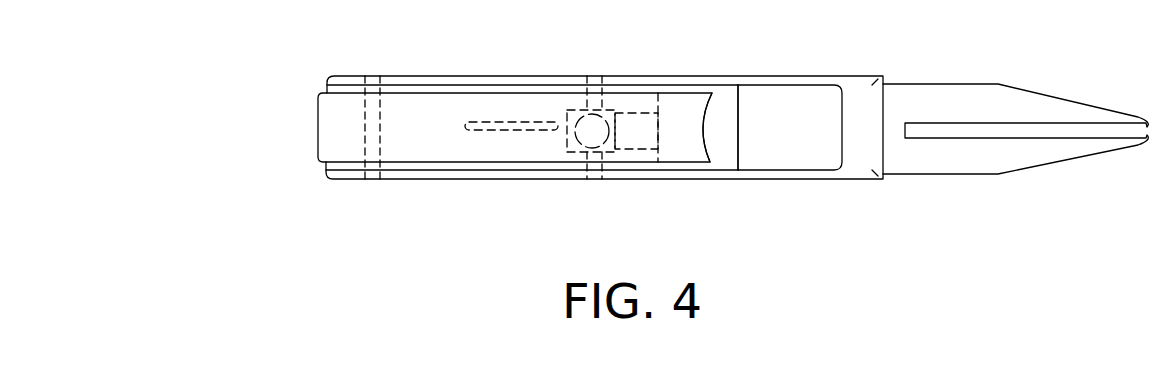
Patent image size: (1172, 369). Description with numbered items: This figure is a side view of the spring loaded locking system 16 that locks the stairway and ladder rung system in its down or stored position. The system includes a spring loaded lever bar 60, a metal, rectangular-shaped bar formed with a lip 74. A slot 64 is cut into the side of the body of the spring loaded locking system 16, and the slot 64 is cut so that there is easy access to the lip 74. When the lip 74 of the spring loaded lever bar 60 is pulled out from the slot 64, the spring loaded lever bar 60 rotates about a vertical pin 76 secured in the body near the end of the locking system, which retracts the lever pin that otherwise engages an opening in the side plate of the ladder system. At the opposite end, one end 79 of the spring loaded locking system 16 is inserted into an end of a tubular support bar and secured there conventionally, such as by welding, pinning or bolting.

The spring loaded locking system 16 is at (400, 207).
The spring loaded lever bar 60 is at (440, 143).
The slot 64 is at (720, 120).
The lip 74 is at (702, 160).
The vertical pin 76 is at (372, 101).
The end of the spring loaded locking system 79 is at (1008, 112).